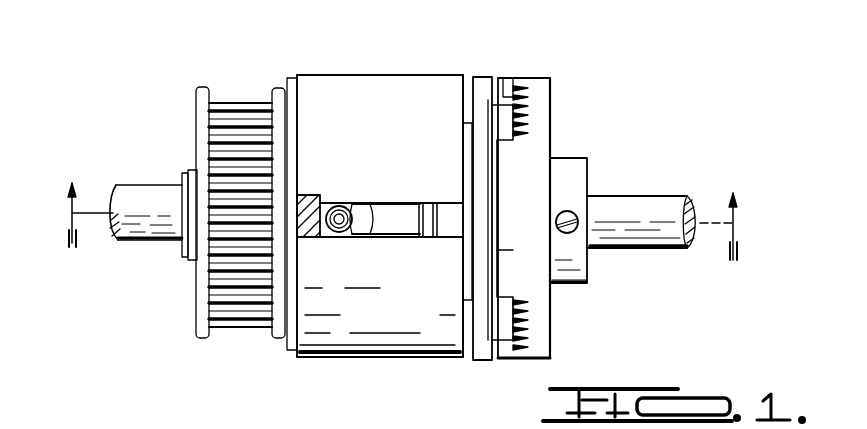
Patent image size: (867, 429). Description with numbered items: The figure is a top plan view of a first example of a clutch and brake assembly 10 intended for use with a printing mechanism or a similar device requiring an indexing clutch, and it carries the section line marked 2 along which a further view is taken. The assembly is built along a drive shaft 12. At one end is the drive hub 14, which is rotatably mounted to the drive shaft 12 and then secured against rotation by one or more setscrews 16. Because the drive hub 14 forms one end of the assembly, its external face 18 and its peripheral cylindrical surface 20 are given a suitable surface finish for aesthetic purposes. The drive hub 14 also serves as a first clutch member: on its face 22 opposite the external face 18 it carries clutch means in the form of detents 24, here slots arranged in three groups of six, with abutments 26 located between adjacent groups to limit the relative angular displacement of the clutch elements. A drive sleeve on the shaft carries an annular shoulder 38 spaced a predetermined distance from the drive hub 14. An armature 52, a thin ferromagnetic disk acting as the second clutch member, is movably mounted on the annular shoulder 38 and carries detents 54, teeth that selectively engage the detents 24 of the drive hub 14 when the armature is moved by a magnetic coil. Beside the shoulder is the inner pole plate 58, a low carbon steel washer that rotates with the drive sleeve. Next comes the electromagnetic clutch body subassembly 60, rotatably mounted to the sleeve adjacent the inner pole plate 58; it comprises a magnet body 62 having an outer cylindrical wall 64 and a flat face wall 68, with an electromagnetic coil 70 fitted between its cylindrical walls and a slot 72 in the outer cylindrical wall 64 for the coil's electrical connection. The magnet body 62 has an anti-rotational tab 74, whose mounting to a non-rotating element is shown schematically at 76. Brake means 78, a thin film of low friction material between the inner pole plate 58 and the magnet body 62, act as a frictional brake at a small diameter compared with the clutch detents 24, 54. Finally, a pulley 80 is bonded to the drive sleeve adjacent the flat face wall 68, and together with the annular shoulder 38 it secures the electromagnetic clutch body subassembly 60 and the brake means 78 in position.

The section line 2- 2 is at (392, 221).
The clutch and brake assembly 10 is at (566, 118).
The drive shaft 12 is at (659, 206).
The drive hub 14 is at (584, 280).
The setscrews 16 is at (578, 216).
The external face 18 is at (551, 140).
The peripheral cylindrical surface 20 is at (541, 77).
The face 22 is at (483, 257).
The detents 24 is at (550, 307).
The abutments 26 is at (517, 307).
The annular shoulder 38 is at (470, 180).
The armature 52 is at (484, 76).
The detents 54 is at (504, 90).
The inner pole plate 58 is at (447, 207).
The electromagnetic clutch body subassembly 60 is at (394, 70).
The magnet body 62 is at (313, 83).
The outer cylindrical wall 64 is at (392, 123).
The flat face wall 68 is at (285, 80).
The electromagnetic coil 70 is at (390, 213).
The slot 72 is at (387, 228).
The anti-rotational tab 74 is at (312, 193).
The mounting of the anti-rotational tab 76 is at (314, 415).
The brake means 78 is at (428, 230).
The pulley 80 is at (195, 100).